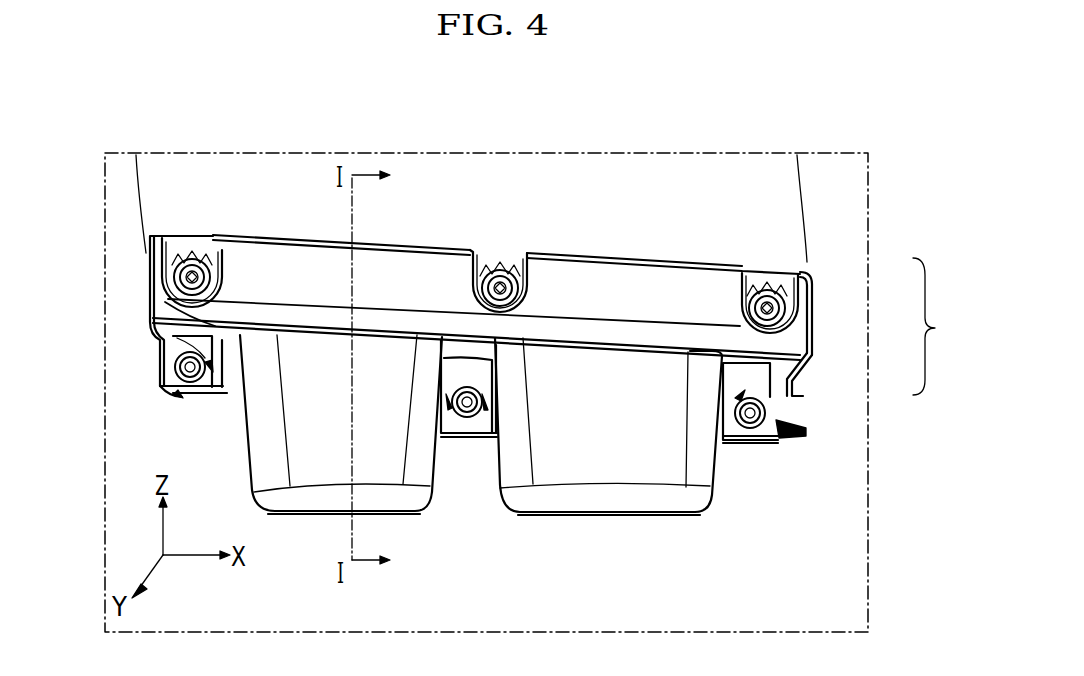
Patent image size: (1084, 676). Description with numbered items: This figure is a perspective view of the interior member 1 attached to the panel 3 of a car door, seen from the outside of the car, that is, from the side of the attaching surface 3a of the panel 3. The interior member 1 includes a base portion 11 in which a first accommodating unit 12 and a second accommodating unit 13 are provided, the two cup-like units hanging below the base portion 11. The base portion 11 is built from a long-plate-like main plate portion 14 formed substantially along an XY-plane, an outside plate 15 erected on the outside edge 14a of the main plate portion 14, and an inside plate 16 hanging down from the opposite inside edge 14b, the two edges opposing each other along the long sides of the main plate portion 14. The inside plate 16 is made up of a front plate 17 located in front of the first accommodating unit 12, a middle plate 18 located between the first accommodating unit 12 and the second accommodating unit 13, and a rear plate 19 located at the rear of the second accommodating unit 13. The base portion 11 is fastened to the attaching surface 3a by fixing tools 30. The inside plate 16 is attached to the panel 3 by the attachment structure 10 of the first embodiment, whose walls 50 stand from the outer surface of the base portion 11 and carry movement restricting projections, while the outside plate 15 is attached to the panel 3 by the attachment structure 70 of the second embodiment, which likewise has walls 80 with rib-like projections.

The interior member 1 is at (676, 246).
The panel 3 is at (259, 172).
The attaching surface 3a is at (297, 175).
The attachment structure 10 is at (227, 390).
The base portion 11 is at (875, 327).
The first accommodating unit 12 is at (605, 518).
The second accommodating unit 13 is at (301, 515).
The main plate portion 14 is at (535, 363).
The outside edge 14a is at (638, 350).
The inside edge 14b is at (470, 363).
The outside plate 15 is at (805, 308).
The inside plate 16 is at (802, 390).
The front plate 17 is at (771, 445).
The middle plate 18 is at (471, 440).
The rear plate 19 is at (167, 388).
The fixing tool 30 is at (806, 282).
The wall 50 is at (163, 322).
The attachment structure 70 is at (180, 238).
The wall 80 is at (205, 252).